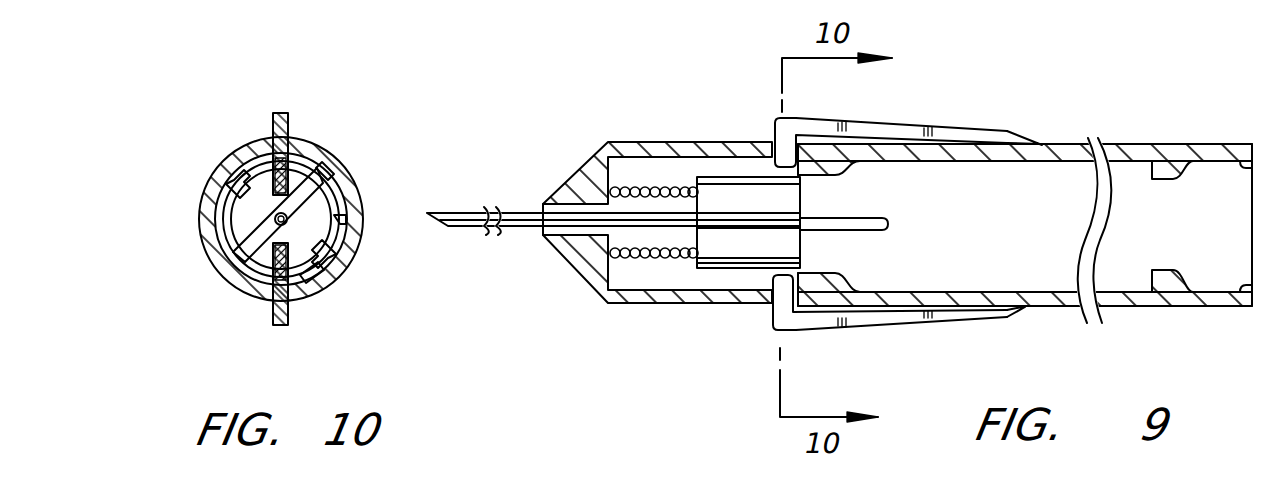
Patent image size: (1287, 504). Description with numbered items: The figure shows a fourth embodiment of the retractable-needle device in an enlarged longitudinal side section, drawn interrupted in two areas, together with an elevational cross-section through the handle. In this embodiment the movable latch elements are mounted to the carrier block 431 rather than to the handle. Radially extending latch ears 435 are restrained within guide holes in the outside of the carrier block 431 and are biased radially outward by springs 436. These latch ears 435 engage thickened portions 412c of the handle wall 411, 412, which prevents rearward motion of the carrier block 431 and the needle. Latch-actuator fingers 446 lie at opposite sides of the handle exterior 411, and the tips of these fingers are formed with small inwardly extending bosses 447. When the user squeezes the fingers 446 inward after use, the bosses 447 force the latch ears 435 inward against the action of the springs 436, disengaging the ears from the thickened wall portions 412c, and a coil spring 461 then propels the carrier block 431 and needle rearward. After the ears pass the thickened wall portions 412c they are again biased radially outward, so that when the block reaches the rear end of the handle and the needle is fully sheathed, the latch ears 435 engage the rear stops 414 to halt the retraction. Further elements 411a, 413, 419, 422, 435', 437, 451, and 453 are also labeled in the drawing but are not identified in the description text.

In FIG. 9, the handle wall 411 is at (1053, 146).
In FIG. 10, the handle wall 411 is at (237, 152).
In FIG. 9, the front end of sleeve 411a is at (772, 306).
In FIG. 9, the handle wall 412 is at (1058, 300).
In FIG. 10, the handle wall 412 is at (260, 160).
In FIG. 9, the thickened portions of the handle wall 412c is at (858, 168).
In FIG. 9, the rear end of sleeve 413 is at (1255, 167).
In FIG. 9, the rear stops 414 is at (1163, 172).
In FIG. 10, the slot 419 is at (372, 252).
In FIG. 9, the needle hub nose 422 is at (581, 275).
In FIG. 9, the carrier block 431 is at (718, 178).
In FIG. 10, the carrier block 431 is at (242, 208).
In FIG. 9, the latch ears 435 is at (786, 235).
In FIG. 10, the latch ears 435 is at (268, 214).
In FIG. 10, the latch bar 435' is at (213, 204).
In FIG. 10, the springs 436 is at (237, 157).
In FIG. 10, the tab 437 is at (381, 178).
In FIG. 9, the latch-actuator fingers 446 is at (910, 131).
In FIG. 9, the bosses 447 is at (776, 132).
In FIG. 10, the bosses 447 is at (290, 120).
In FIG. 9, the needle 451 is at (464, 214).
In FIG. 9, the rod 453 is at (890, 224).
In FIG. 9, the coil spring 461 is at (650, 190).